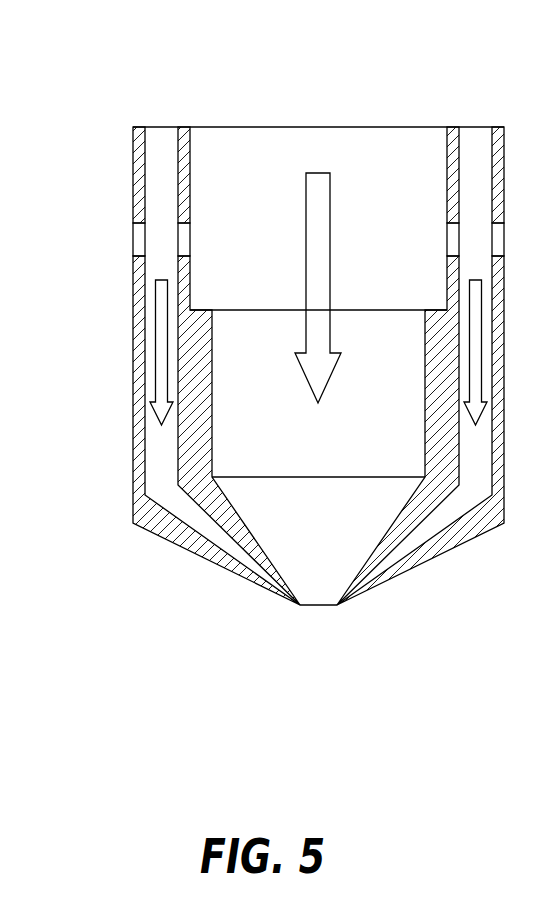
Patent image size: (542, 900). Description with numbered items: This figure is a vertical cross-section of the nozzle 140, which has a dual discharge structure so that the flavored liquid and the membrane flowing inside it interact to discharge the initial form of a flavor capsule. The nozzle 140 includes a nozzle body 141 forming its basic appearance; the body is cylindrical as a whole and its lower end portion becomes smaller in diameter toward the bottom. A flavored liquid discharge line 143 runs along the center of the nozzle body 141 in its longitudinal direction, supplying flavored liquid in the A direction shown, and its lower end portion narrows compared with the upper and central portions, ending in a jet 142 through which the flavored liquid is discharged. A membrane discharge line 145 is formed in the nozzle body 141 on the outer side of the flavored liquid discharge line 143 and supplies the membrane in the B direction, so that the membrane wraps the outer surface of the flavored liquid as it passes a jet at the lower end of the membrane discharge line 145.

The nozzle 140 is at (350, 47).
The nozzle body 141 is at (133, 266).
The jet 142 is at (318, 607).
The flavored liquid discharge line 143 is at (260, 433).
The membrane discharge line 145 is at (150, 358).